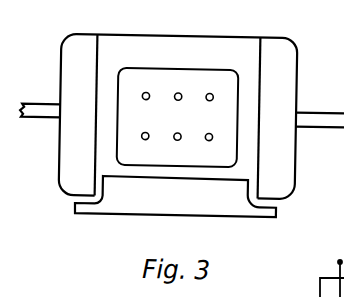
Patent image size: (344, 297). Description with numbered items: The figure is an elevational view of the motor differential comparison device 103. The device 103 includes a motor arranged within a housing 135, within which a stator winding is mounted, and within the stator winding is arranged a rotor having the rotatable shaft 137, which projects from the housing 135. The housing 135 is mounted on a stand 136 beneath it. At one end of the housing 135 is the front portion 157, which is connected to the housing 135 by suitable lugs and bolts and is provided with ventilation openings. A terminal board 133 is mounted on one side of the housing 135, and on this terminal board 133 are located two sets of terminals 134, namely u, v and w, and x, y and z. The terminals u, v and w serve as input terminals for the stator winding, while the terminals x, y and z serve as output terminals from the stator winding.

The differential comparison device 103 is at (178, 106).
The terminal board 133 is at (226, 73).
The terminals 134 is at (143, 134).
The housing 135 is at (186, 36).
The stand 136 is at (136, 205).
The rotatable shaft 137 is at (323, 124).
The front portion 157 is at (281, 68).